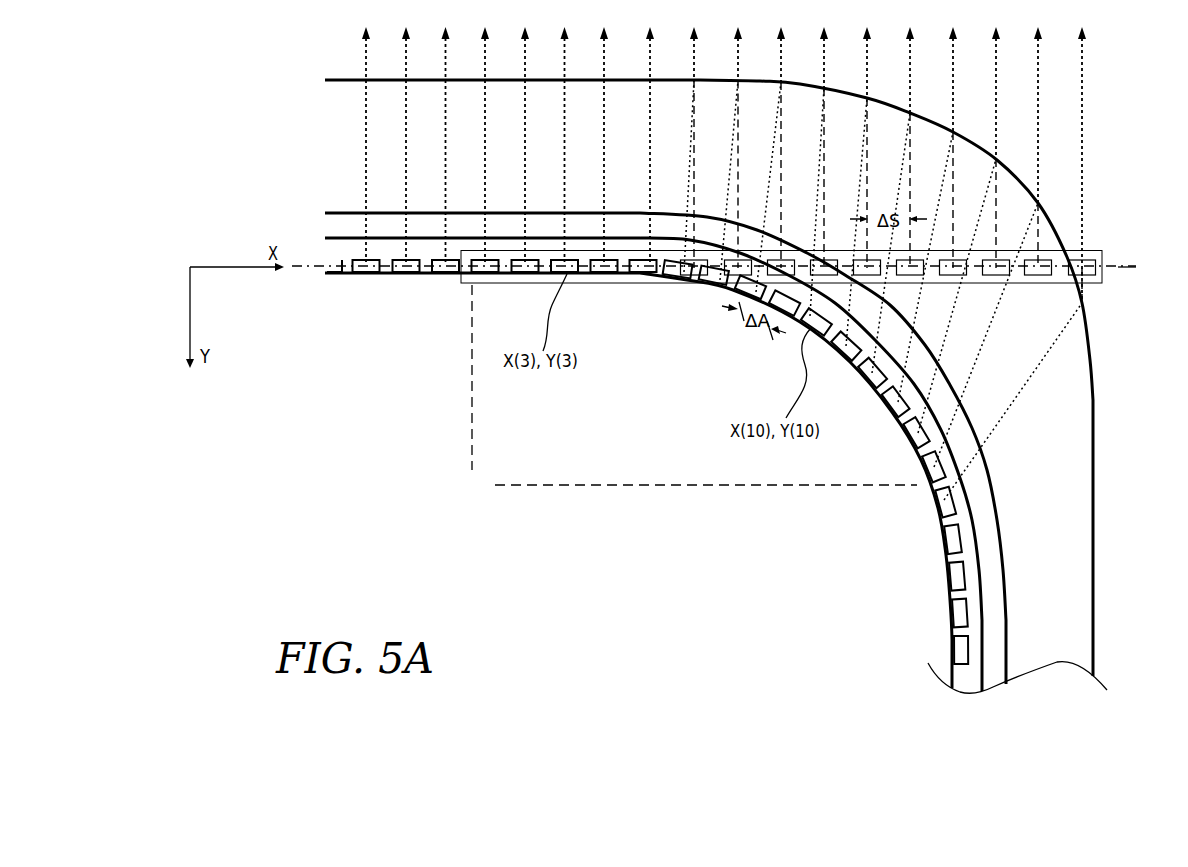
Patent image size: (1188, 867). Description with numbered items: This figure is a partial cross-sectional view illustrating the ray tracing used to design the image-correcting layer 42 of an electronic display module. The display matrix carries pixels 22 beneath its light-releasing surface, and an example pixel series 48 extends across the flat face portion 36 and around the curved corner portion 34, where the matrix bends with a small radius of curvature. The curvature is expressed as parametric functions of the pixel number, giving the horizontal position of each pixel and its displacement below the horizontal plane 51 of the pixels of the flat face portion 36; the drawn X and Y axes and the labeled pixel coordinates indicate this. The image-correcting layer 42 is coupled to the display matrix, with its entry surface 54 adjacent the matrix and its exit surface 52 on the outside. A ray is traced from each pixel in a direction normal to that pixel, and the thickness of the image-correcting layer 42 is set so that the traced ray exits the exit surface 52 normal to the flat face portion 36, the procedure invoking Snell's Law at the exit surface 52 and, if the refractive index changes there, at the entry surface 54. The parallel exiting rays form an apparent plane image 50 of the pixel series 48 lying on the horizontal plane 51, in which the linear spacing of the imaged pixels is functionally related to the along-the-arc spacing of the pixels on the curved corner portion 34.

The pixels 22 is at (408, 276).
The curved corner portion 34 is at (850, 422).
The flat face portion 36 is at (441, 341).
The image-correcting layer 42 is at (1048, 458).
The pixel series 48 is at (690, 391).
The apparent plane image 50 is at (1123, 212).
The horizontal plane 51 is at (1127, 268).
The exit surface 52 is at (700, 372).
The entry surface 54 is at (656, 443).